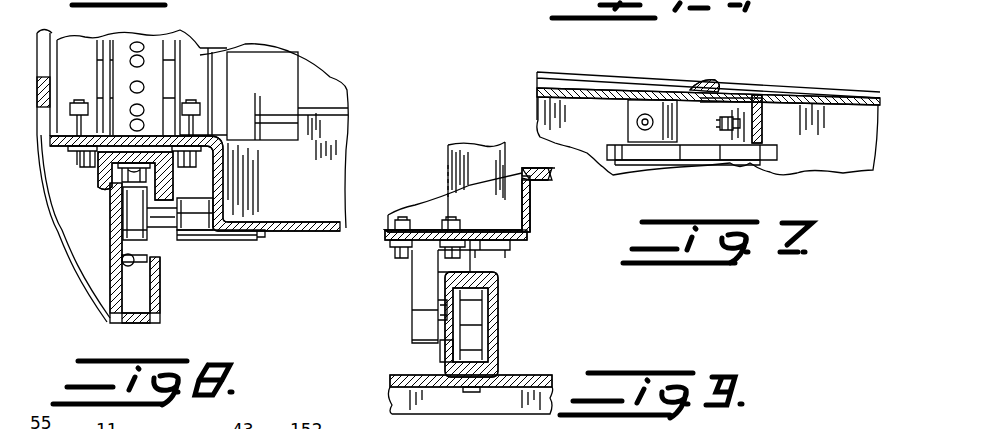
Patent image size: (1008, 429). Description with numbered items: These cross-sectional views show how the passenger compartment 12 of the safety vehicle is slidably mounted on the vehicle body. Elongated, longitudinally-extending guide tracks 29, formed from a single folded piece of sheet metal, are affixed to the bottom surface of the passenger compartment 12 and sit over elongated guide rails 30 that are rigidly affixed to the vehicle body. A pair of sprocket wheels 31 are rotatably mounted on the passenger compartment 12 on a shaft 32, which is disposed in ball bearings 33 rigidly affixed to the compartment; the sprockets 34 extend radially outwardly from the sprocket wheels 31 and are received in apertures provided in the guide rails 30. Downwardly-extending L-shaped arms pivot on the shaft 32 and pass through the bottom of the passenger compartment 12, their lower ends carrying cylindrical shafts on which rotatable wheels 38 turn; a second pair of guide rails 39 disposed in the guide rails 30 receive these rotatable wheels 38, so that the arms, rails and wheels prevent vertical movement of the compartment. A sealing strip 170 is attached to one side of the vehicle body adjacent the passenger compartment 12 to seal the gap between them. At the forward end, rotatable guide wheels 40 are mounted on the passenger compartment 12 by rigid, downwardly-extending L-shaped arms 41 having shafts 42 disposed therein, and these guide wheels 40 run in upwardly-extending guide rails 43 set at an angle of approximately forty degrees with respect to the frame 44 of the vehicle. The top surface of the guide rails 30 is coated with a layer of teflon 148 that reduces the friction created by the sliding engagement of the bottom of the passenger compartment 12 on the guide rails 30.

In FIG. 8, the passenger compartment 12 is at (50, 22).
In FIG. 9, the passenger compartment 12 is at (528, 217).
In FIG. 7, the passenger compartment 12 is at (732, 88).
In FIG. 8, the guide tracks 29 is at (98, 170).
In FIG. 8, the guide rails 30 is at (110, 208).
In FIG. 8, the sprocket wheels 31 is at (125, 52).
In FIG. 7, the sprocket wheels 31 is at (712, 167).
In FIG. 8, the shaft 32 is at (330, 88).
In FIG. 7, the shaft 32 is at (627, 142).
In FIG. 8, the ball bearings 33 is at (80, 62).
In FIG. 7, the ball bearings 33 is at (687, 115).
In FIG. 8, the sprockets 34 is at (145, 86).
In FIG. 8, the rotatable wheels 38 is at (150, 248).
In FIG. 8, the second guide rails 39 is at (118, 262).
In FIG. 9, the guide wheels 40 is at (475, 317).
In FIG. 9, the L-shaped arms 41 is at (420, 278).
In FIG. 9, the shafts 42 is at (447, 350).
In FIG. 9, the upwardly-extending guide rails 43 is at (481, 152).
In FIG. 9, the frame 44 is at (527, 385).
In FIG. 8, the layer of teflon 148 is at (173, 170).
In FIG. 7, the sealing strip 170 is at (577, 80).